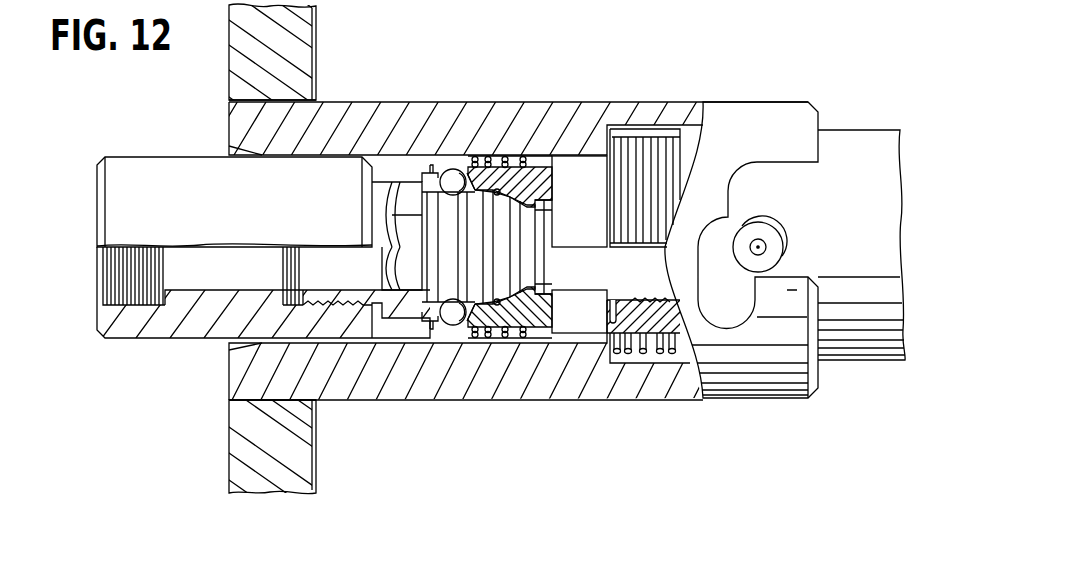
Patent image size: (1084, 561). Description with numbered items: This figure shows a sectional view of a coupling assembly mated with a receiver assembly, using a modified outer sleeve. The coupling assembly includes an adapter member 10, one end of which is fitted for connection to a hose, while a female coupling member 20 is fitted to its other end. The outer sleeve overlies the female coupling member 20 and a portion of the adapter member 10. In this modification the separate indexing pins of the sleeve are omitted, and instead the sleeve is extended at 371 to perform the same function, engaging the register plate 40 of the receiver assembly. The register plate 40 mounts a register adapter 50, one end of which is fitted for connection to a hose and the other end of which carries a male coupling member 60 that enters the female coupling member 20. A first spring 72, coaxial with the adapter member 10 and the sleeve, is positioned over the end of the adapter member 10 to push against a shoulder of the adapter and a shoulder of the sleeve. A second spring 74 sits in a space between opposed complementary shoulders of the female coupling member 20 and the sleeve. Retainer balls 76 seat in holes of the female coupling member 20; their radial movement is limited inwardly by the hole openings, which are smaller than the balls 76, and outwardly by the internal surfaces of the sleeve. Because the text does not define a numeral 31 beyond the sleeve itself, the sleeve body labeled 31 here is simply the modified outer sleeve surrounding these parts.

The adapter member 10 is at (878, 130).
The female coupling member 20 is at (562, 175).
The housing 31 is at (560, 100).
The register plate 40 is at (302, 58).
The register adapter 50 is at (166, 164).
The male coupling member 60 is at (390, 178).
The first spring 72 is at (646, 126).
The second spring 74 is at (504, 160).
The retainer balls 76 is at (450, 172).
The sleeve extension 371 is at (248, 118).